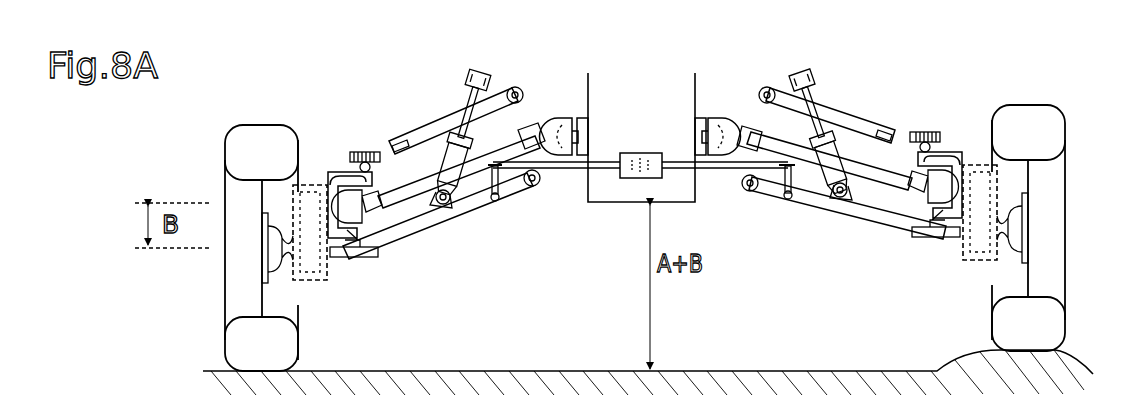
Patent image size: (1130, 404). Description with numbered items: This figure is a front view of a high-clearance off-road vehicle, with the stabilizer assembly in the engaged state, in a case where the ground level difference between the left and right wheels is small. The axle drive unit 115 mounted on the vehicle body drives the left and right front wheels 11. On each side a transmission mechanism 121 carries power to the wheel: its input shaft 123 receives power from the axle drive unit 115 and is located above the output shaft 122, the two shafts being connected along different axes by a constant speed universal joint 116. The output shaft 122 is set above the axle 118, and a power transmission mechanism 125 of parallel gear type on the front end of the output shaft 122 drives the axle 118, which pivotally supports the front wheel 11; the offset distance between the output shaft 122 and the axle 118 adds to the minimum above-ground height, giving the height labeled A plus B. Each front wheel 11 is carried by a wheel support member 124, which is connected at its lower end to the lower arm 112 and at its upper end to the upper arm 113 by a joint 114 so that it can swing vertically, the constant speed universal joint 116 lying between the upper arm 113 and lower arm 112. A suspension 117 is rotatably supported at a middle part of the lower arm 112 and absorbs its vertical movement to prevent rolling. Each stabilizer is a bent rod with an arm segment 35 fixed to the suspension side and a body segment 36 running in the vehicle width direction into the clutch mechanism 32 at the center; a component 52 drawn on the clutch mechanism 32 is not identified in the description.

The front wheel 11 is at (656, 377).
The clutch mechanism 32 is at (624, 148).
The arm segment 35 is at (506, 182).
The body segment 36 is at (565, 170).
The steering actuator 52 is at (645, 152).
The lower arm 112 is at (437, 220).
The upper arm 113 is at (428, 140).
The joint 114 is at (368, 150).
The axle drive unit 115 is at (600, 205).
The constant speed universal joint 116 is at (398, 200).
The suspension 117 is at (458, 92).
The axle 118 is at (282, 258).
The transmission mechanism 121 is at (543, 97).
The output shaft 122 is at (326, 180).
The input shaft 123 is at (575, 125).
The wheel support member 124 is at (336, 174).
The power transmission mechanism 125 is at (325, 272).